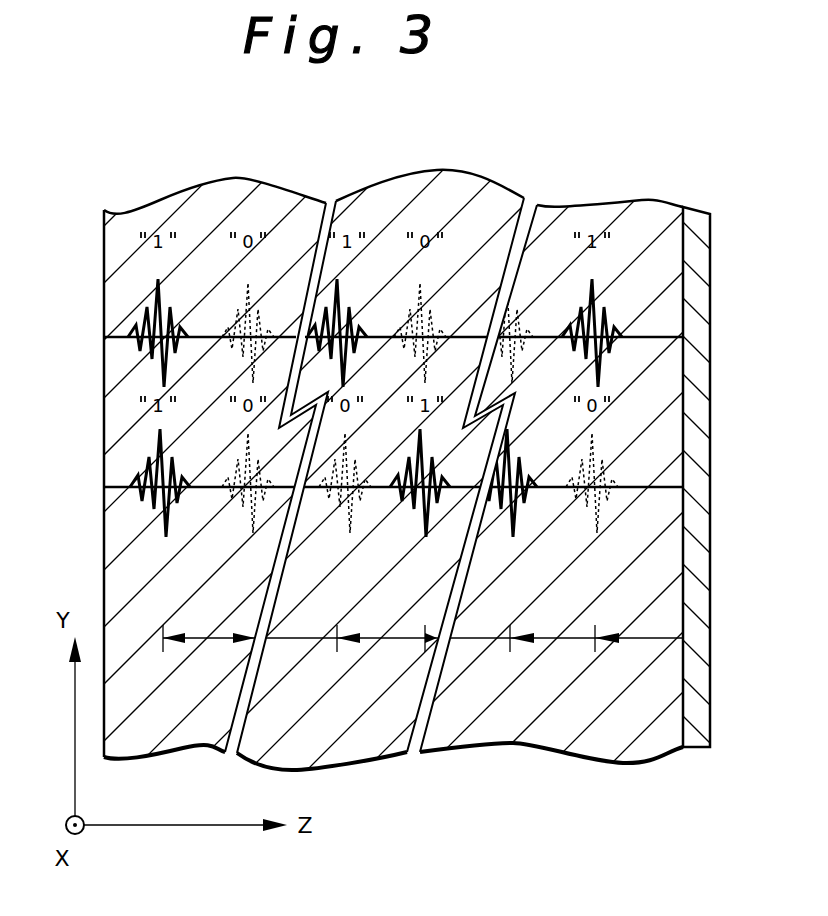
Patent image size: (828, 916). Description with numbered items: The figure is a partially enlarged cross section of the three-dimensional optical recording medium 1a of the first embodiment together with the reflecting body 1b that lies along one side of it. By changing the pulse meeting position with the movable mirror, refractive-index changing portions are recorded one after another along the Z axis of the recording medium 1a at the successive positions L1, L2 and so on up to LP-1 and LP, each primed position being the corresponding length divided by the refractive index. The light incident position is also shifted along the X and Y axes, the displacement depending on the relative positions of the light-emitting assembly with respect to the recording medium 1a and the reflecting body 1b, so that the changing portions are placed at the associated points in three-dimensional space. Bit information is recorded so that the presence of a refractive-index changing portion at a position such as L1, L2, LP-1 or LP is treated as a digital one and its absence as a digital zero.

The three-dimensional optical recording medium 1a is at (458, 170).
The reflecting body 1b is at (690, 208).
The recording position L'p LP is at (261, 664).
The recording position L'p-1 LP-1 is at (388, 664).
The recording position L'2 L2 is at (522, 664).
The recording position L'1 L1 is at (633, 664).